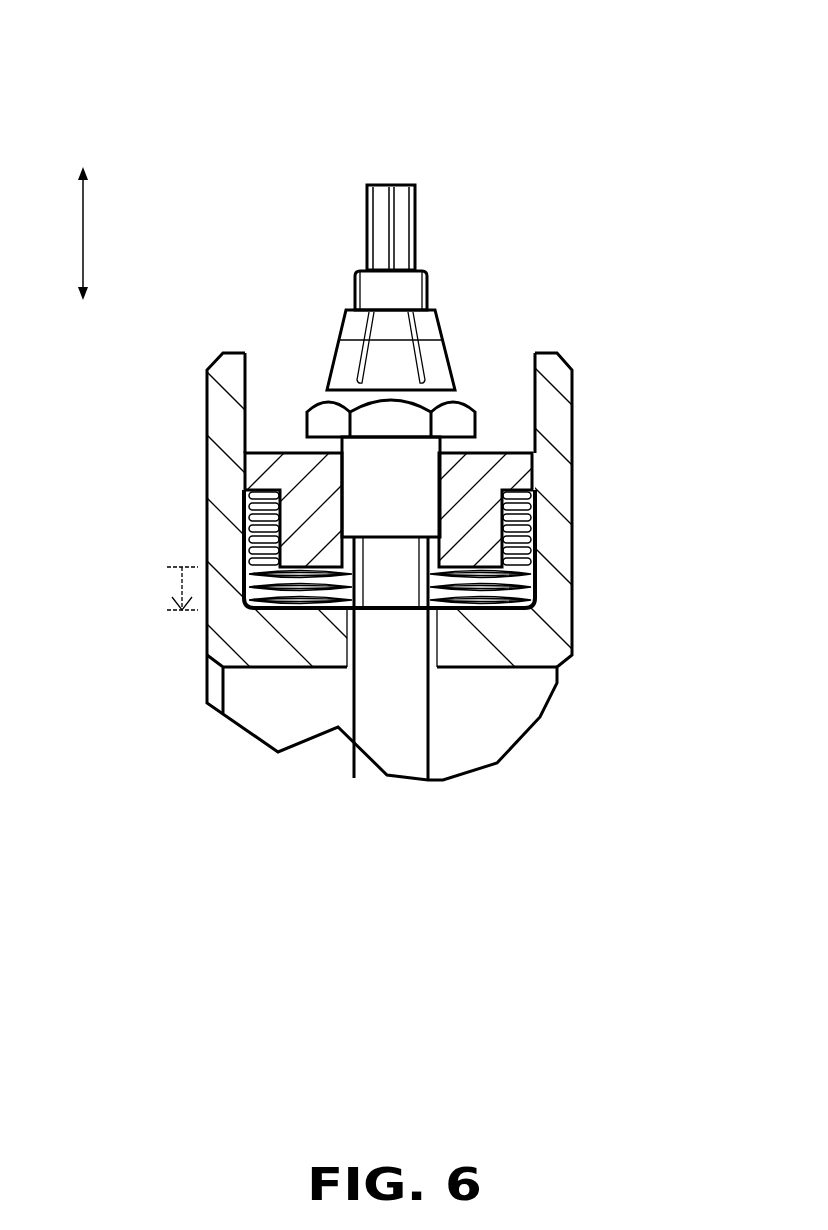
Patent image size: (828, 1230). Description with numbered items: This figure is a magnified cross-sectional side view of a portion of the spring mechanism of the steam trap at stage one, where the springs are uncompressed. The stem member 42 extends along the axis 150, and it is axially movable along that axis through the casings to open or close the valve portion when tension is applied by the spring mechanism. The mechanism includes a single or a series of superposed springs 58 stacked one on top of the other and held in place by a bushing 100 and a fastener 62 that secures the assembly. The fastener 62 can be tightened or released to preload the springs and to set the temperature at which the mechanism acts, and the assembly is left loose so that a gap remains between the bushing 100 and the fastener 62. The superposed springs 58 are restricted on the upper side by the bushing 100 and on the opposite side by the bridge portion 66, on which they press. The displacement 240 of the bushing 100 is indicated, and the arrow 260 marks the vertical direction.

The axis 150 is at (390, 24).
The stem member 42 is at (405, 200).
The fastener 62 is at (433, 352).
The bushing 100 is at (503, 467).
The superposed springs 58 is at (537, 537).
The bridge portion 66 is at (557, 597).
The vertical direction 260 is at (83, 238).
The displacement 240 is at (180, 575).